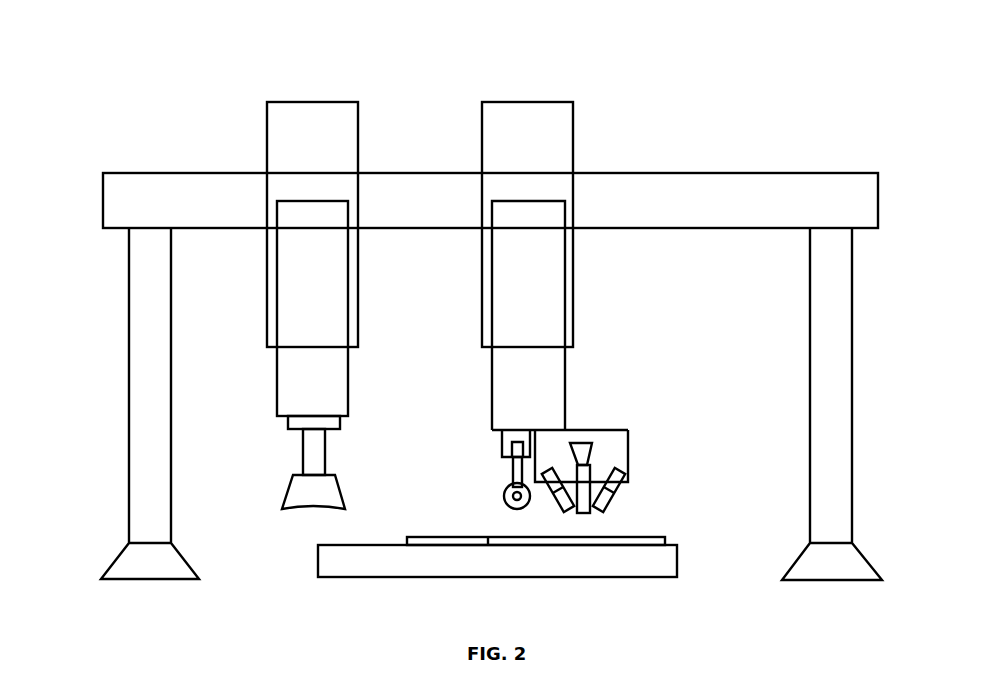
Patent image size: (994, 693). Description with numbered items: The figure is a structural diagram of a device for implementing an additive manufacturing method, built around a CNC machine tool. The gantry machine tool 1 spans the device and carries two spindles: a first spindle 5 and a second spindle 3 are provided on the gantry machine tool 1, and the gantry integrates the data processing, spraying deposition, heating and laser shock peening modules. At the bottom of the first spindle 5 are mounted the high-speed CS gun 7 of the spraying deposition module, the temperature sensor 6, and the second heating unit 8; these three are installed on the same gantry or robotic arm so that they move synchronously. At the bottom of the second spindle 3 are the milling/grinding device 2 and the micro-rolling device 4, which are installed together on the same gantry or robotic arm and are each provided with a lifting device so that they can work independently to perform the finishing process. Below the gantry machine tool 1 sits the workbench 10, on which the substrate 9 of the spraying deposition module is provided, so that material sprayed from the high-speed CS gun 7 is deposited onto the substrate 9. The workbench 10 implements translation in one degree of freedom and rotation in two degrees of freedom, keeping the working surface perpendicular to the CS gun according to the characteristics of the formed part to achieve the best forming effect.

The gantry machine tool 1 is at (88, 332).
The milling/grinding device 2 is at (283, 495).
The second spindle 3 is at (358, 150).
The micro-rolling device 4 is at (503, 430).
The first spindle 5 is at (483, 130).
The temperature sensor 6 is at (565, 473).
The high-speed CS gun 7 is at (590, 443).
The second heating unit 8 is at (619, 474).
The substrate 9 is at (625, 537).
The workbench 10 is at (643, 562).